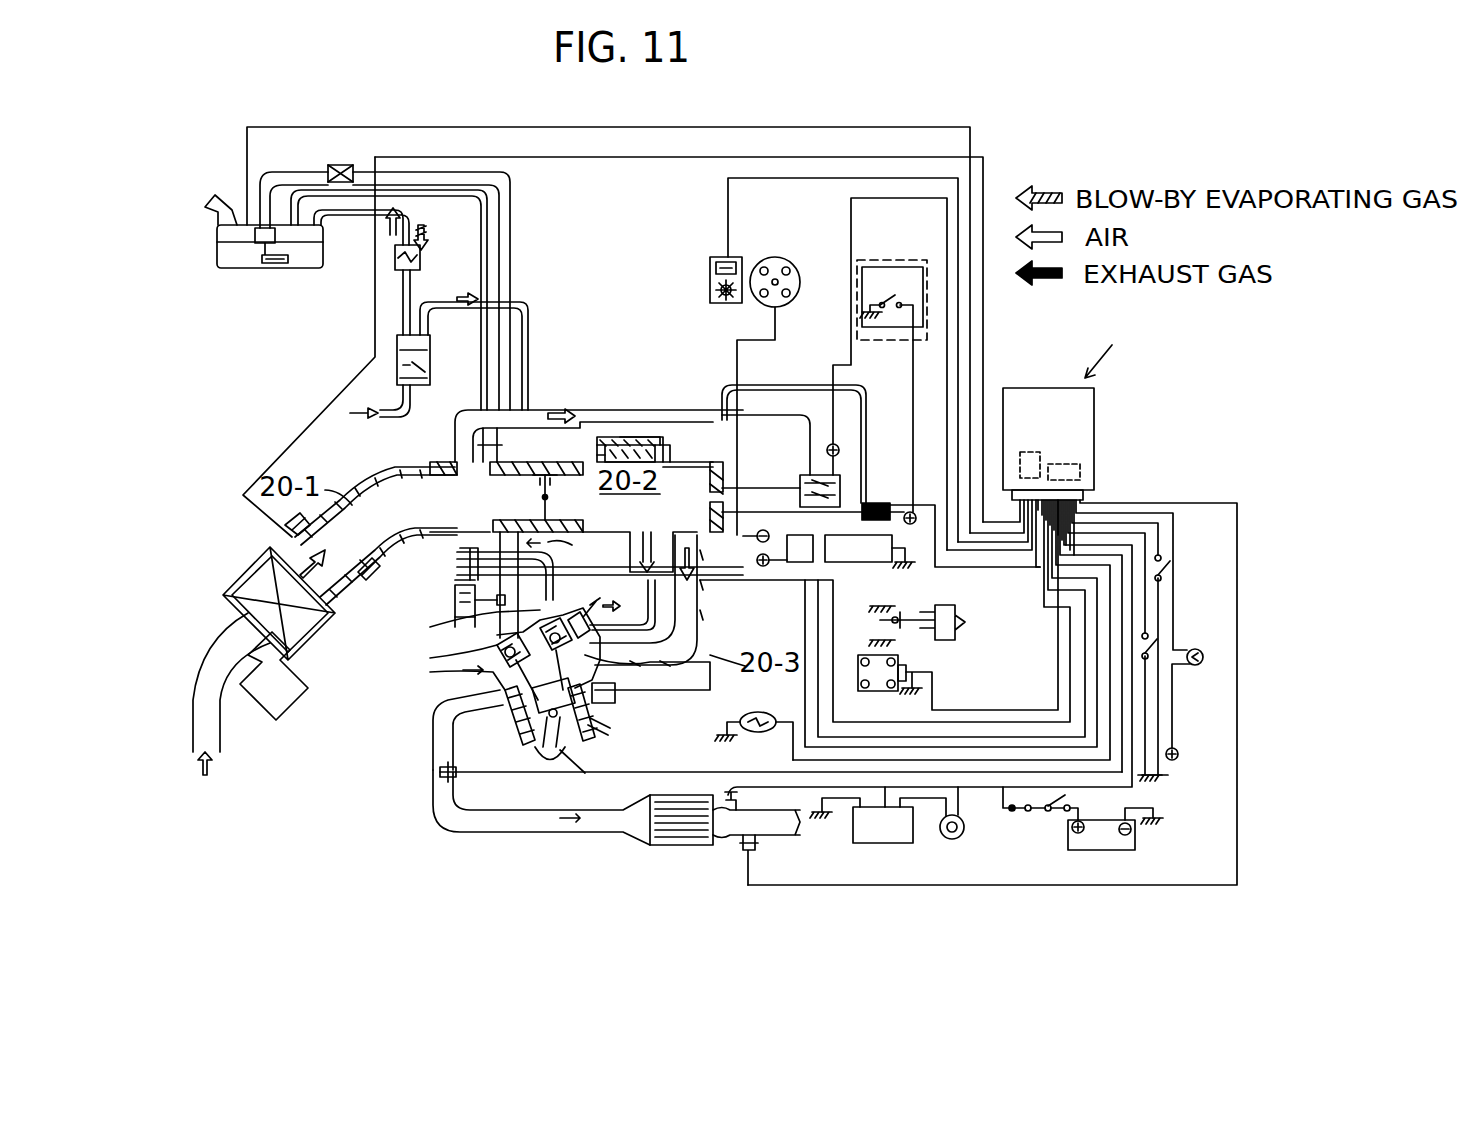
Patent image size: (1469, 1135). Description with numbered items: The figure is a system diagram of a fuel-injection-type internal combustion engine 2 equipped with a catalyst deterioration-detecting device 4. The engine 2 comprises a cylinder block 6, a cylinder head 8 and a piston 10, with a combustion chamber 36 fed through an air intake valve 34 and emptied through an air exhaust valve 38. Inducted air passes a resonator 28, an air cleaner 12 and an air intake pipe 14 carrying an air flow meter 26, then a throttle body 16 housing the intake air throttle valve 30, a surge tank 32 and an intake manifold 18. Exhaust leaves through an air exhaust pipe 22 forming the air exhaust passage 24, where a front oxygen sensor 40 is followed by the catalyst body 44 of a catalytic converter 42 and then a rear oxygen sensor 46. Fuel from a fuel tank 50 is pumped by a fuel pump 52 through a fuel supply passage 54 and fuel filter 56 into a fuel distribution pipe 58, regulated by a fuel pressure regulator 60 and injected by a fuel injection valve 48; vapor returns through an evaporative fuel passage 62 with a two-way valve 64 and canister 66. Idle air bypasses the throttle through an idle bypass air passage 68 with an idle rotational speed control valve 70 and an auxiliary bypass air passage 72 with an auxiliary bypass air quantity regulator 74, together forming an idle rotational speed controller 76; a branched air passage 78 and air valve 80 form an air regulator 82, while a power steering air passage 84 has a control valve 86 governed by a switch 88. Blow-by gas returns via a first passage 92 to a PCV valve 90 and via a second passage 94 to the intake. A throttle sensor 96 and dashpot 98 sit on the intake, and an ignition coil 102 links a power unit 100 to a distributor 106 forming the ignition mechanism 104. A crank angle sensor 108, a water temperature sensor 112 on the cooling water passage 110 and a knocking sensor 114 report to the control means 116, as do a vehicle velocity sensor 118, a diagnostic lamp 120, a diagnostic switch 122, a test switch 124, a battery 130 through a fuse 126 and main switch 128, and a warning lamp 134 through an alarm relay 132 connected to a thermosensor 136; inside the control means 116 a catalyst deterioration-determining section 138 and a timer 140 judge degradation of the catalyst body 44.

The internal combustion engine 2 is at (743, 687).
The catalyst deterioration-detecting device 4 is at (1104, 352).
The cylinder block 6 is at (535, 740).
The cylinder head 8 is at (458, 660).
The piston 10 is at (575, 773).
The air cleaner 12 is at (238, 580).
The air intake pipe 14 is at (356, 473).
The throttle body 16 is at (565, 546).
The intake manifold 18 is at (718, 640).
The air exhaust pipe 22 is at (515, 824).
The air exhaust passage 24 is at (498, 833).
The air flow meter 26 is at (277, 535).
The resonator 28 is at (300, 712).
The intake air throttle valve 30 is at (550, 495).
The surge tank 32 is at (696, 466).
The air intake valve 34 is at (505, 638).
The combustion chamber 36 is at (517, 715).
The air exhaust valve 38 is at (455, 705).
The front oxygen sensor 40 is at (458, 777).
The catalytic converter 42 is at (639, 848).
The catalyst body 44 is at (680, 838).
The rear oxygen sensor 46 is at (757, 845).
The fuel injection valve 48 is at (578, 605).
The fuel tank 50 is at (198, 256).
The fuel pump 52 is at (262, 250).
The fuel supply passage 54 is at (520, 246).
The fuel filter 56 is at (330, 168).
The fuel distribution pipe 58 is at (500, 640).
The fuel pressure regulator 60 is at (455, 600).
The evaporative fuel passage 62 is at (532, 320).
The two-way valve 64 is at (422, 258).
The canister 66 is at (425, 340).
The idle bypass air passage 68 is at (640, 440).
The idle rotational speed control valve 70 is at (800, 480).
The auxiliary bypass air passage 72 is at (535, 480).
The auxiliary bypass air quantity regulator 74 is at (490, 445).
The idle rotational speed controller 76 is at (575, 402).
The air passage 78 is at (612, 442).
The air valve 80 is at (628, 437).
The air regulator 82 is at (668, 443).
The air passage for power steering 84 is at (866, 400).
The control valve for power steering 86 is at (875, 503).
The switch for power steering 88 is at (888, 282).
The PCV valve 90 is at (648, 552).
The first blow-by gas-returning flow passage 92 is at (655, 598).
The second blow-by gas-returning flow passage 94 is at (462, 568).
The throttle sensor 96 is at (878, 691).
The dashpot 98 is at (958, 622).
The power unit 100 is at (860, 563).
The ignition coil 102 is at (798, 563).
The ignition mechanism 104 is at (750, 252).
The distributor 106 is at (792, 264).
The crank angle sensor 108 is at (710, 278).
The cooling water passage 110 is at (605, 730).
The water temperature sensor 112 is at (618, 703).
The knocking sensor 114 is at (658, 672).
The control means 116 is at (1084, 419).
The vehicle velocity sensor 118 is at (760, 733).
The diagnostic lamp 120 is at (1198, 665).
The diagnostic switch 122 is at (1165, 566).
The test switch 124 is at (1158, 645).
The fuse 126 is at (1015, 812).
The main switch 128 is at (1048, 812).
The battery 130 is at (1120, 850).
The alarm relay 132 is at (885, 843).
The warning lamp 134 is at (945, 838).
The thermosensor 136 is at (730, 812).
The catalyst deterioration-determining section 138 is at (1040, 462).
The timer 140 is at (1080, 475).